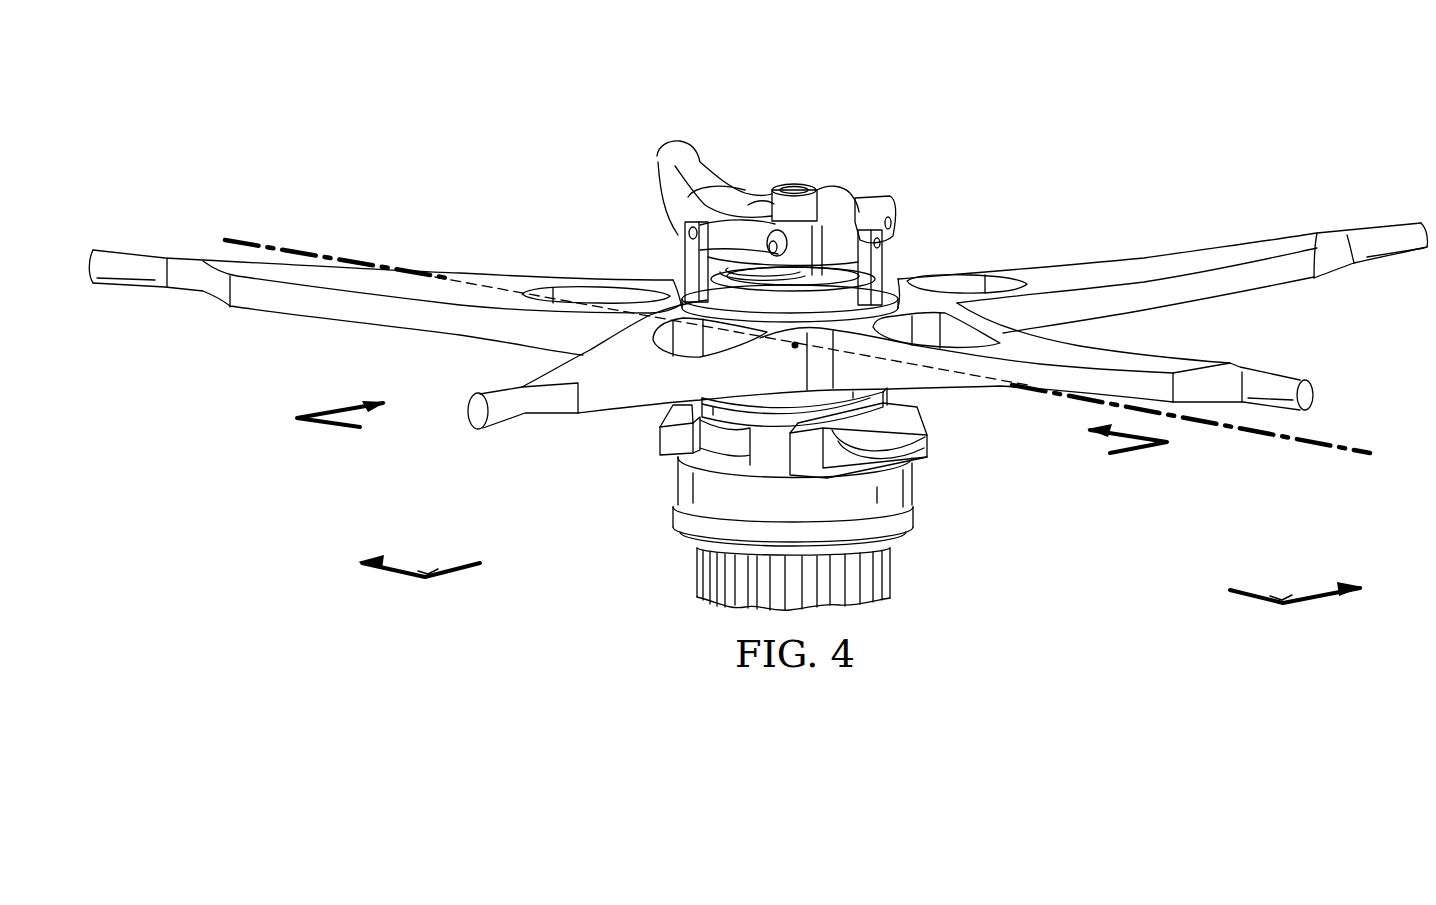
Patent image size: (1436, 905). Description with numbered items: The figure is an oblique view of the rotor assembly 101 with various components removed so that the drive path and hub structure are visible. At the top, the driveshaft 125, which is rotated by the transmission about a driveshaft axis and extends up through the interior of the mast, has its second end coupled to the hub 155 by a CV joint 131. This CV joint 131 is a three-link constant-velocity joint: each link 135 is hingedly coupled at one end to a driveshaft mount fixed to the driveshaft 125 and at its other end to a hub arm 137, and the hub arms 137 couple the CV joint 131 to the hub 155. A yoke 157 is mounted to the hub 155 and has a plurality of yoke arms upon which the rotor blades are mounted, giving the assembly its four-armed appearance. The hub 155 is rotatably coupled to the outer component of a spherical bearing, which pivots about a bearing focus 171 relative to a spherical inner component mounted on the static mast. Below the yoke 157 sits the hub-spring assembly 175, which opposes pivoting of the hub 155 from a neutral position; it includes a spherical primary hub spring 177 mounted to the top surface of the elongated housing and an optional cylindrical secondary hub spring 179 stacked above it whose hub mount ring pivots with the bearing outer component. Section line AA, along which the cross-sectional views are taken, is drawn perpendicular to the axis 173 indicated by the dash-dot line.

The rotor assembly 101 is at (542, 89).
The driveshaft 125 is at (787, 188).
The CV joint 131 is at (855, 181).
The link 135 is at (870, 197).
The hub arm 137 is at (688, 262).
The hub 155 is at (915, 303).
The yoke 157 is at (1077, 238).
The bearing focus 171 is at (795, 345).
The axis 173 is at (1352, 452).
The hub-spring assembly 175 is at (602, 495).
The primary hub spring 177 is at (921, 491).
The secondary hub spring 179 is at (654, 443).